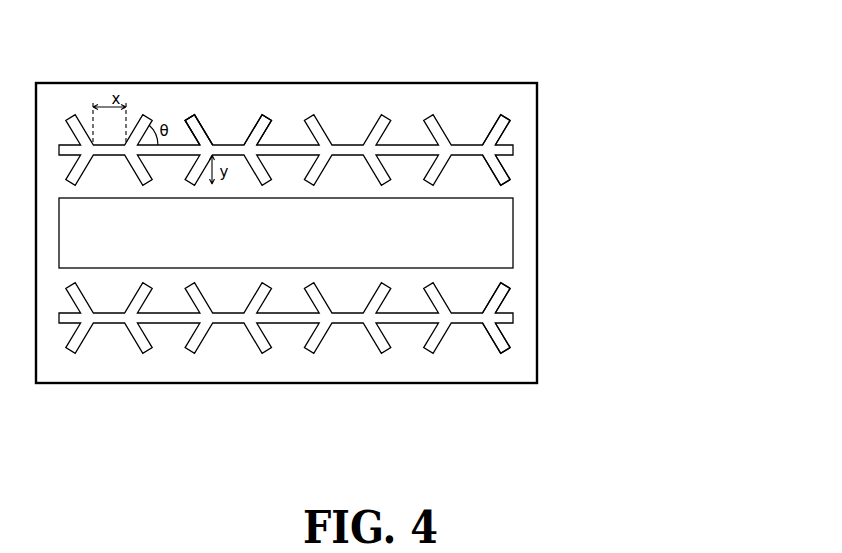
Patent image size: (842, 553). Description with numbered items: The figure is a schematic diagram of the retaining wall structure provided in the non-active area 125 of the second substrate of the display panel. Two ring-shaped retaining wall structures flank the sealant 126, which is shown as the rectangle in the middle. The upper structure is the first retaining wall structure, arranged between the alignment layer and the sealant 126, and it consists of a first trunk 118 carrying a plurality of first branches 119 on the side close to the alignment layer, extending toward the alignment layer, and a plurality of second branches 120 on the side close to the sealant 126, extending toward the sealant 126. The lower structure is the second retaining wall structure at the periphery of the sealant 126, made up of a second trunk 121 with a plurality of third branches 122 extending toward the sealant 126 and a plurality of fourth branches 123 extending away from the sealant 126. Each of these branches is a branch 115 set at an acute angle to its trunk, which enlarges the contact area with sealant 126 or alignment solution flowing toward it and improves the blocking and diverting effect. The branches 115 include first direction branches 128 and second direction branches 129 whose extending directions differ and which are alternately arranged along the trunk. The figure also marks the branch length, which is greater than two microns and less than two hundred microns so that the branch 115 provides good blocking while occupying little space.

The branches 115 is at (197, 127).
The first direction branches 128 is at (199, 130).
The second direction branches 129 is at (260, 123).
The first trunk 118 is at (278, 157).
The non-active area 125 is at (385, 97).
The first branches 119 is at (503, 137).
The second branches 120 is at (505, 183).
The sealant 126 is at (480, 243).
The third branches 122 is at (503, 305).
The fourth branches 123 is at (498, 347).
The second trunk 121 is at (293, 313).